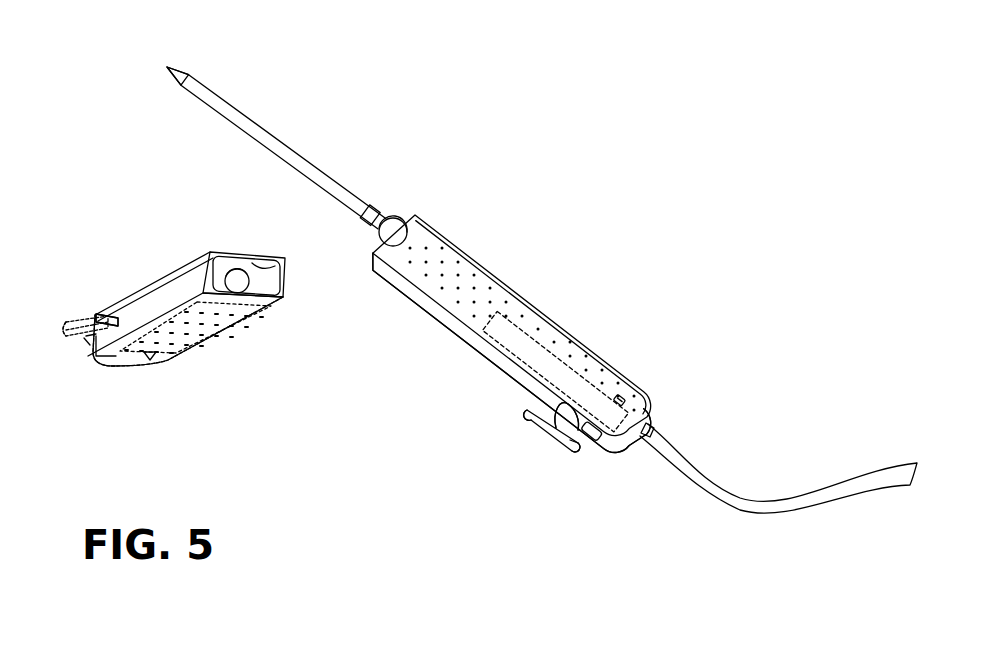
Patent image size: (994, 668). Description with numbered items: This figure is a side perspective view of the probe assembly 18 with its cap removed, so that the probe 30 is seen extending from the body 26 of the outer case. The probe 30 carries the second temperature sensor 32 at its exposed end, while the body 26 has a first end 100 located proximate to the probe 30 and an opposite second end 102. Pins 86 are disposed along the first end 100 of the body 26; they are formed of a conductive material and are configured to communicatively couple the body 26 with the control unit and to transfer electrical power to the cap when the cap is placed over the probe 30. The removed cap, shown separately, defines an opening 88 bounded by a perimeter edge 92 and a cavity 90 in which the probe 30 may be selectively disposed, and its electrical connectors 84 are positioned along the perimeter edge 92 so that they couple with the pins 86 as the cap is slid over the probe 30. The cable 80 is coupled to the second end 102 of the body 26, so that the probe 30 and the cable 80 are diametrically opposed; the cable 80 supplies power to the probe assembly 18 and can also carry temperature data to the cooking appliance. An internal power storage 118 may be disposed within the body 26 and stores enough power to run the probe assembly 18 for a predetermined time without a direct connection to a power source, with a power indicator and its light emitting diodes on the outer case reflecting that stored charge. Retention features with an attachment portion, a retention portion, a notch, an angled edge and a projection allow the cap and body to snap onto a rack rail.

The probe assembly 18 is at (512, 168).
The body 26 is at (541, 311).
The probe 30 is at (272, 145).
The second temperature sensor 32 is at (181, 71).
The cable 80 is at (735, 490).
The electrical connectors 84 is at (273, 263).
The pins 86 is at (396, 219).
The opening 88 is at (270, 293).
The cavity 90 is at (210, 342).
The perimeter edge 92 is at (255, 297).
The first end 100 is at (412, 216).
The second end 102 is at (660, 430).
The internal power storage 118 is at (496, 330).